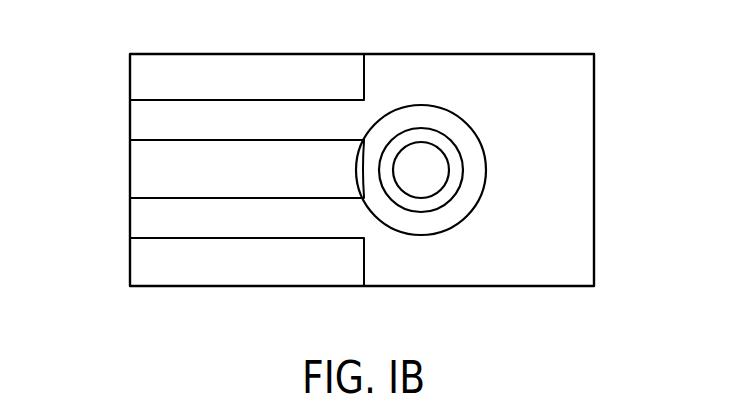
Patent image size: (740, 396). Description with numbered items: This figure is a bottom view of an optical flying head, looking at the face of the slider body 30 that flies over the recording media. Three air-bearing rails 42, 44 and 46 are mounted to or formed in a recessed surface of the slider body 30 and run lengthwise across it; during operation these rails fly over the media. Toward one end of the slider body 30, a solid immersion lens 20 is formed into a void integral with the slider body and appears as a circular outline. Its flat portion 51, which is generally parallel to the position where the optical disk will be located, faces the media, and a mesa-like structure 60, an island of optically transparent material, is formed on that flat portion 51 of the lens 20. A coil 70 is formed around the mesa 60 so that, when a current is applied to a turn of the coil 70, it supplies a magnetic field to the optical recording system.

The solid immersion lens 20 is at (440, 106).
The slider body 30 is at (130, 263).
The air-bearing rail 42 is at (190, 62).
The air-bearing rail 44 is at (202, 267).
The air-bearing rail 46 is at (138, 173).
The flat portion 51 is at (405, 220).
The mesa-like structure 60 is at (433, 205).
The coil 70 is at (455, 196).